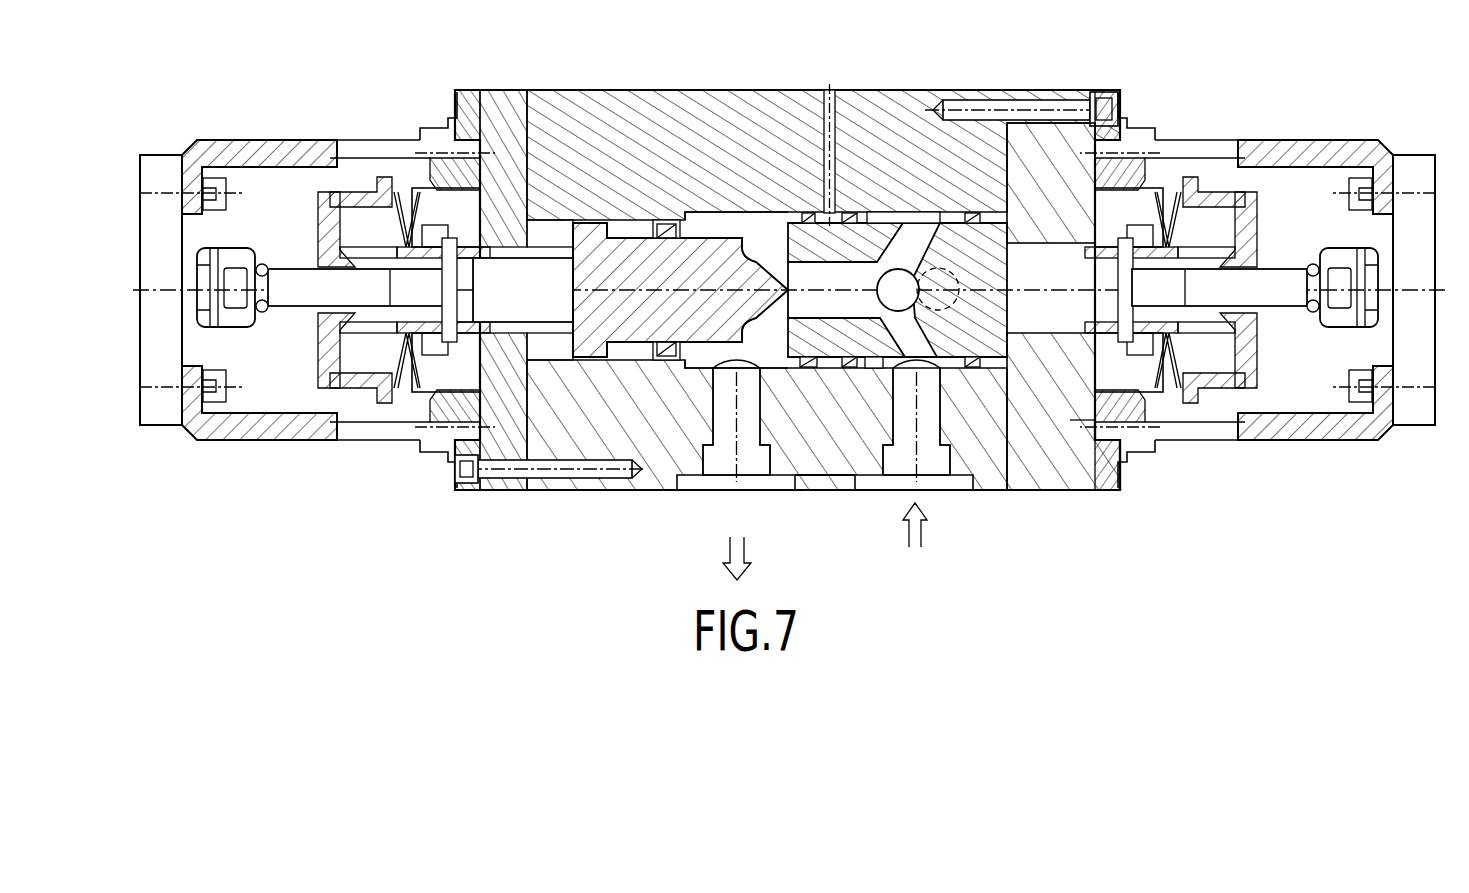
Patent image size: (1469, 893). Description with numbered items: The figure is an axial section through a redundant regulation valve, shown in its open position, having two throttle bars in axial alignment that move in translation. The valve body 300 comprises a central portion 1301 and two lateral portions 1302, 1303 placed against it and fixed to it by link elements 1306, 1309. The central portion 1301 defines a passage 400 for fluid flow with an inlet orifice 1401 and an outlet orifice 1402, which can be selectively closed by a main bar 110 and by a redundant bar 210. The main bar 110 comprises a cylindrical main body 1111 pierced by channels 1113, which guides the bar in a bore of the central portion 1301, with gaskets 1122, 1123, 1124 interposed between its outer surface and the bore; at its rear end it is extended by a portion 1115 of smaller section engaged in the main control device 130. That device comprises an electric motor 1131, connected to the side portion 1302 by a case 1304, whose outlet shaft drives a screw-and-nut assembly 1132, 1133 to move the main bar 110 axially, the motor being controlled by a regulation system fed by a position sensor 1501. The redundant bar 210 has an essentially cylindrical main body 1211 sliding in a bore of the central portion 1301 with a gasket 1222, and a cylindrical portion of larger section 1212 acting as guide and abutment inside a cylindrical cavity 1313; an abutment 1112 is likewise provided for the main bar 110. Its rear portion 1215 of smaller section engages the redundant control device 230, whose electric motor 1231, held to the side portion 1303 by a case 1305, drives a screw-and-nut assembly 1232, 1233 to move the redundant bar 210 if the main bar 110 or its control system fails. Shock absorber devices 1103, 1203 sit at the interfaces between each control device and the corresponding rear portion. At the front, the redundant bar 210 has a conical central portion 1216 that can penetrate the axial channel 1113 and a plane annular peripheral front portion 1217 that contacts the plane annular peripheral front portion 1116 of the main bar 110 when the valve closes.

The main bar 110 is at (1100, 238).
The main control device 130 is at (1285, 132).
The redundant bar 210 is at (452, 484).
The redundant control device 230 is at (317, 136).
The valve body 300 is at (718, 80).
The passage 400 is at (897, 491).
The shock absorber device 1103 is at (1160, 405).
The cylindrical main body 1111 is at (953, 230).
The abutment 1112 is at (1017, 385).
The channel 1113 is at (840, 318).
The portion of smaller section 1115 is at (1063, 306).
The plane annular peripheral front portion 1116 is at (768, 236).
The gasket 1122 is at (974, 212).
The gasket 1123 is at (862, 373).
The gasket 1124 is at (847, 372).
The electric motor 1131 is at (1410, 170).
The screw-and-nut assembly 1132 is at (1282, 303).
The screw-and-nut assembly 1133 is at (1260, 234).
The shock absorber device 1203 is at (372, 413).
The main body 1211 is at (618, 210).
The cylindrical portion of larger section 1212 is at (596, 350).
The portion of smaller section 1215 is at (393, 417).
The conical central portion 1216 is at (788, 400).
The plane annular peripheral front portion 1217 is at (690, 180).
The gasket 1222 is at (670, 353).
The electric motor 1231 is at (163, 167).
The screw-and-nut assembly 1232 is at (282, 307).
The screw-and-nut assembly 1233 is at (322, 232).
The central portion 1301 is at (771, 110).
The lateral portion 1302 is at (1088, 441).
The lateral portion 1303 is at (487, 92).
The case 1304 is at (1337, 405).
The case 1305 is at (207, 437).
The link element 1306 is at (1050, 106).
The link element 1309 is at (504, 478).
The cylindrical cavity 1313 is at (545, 100).
The inlet orifice 1401 is at (938, 463).
The outlet orifice 1402 is at (767, 460).
The sensor 1501 is at (829, 200).